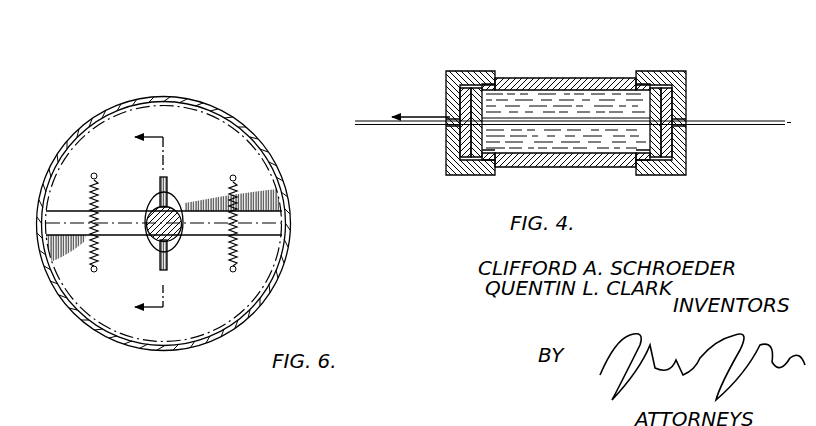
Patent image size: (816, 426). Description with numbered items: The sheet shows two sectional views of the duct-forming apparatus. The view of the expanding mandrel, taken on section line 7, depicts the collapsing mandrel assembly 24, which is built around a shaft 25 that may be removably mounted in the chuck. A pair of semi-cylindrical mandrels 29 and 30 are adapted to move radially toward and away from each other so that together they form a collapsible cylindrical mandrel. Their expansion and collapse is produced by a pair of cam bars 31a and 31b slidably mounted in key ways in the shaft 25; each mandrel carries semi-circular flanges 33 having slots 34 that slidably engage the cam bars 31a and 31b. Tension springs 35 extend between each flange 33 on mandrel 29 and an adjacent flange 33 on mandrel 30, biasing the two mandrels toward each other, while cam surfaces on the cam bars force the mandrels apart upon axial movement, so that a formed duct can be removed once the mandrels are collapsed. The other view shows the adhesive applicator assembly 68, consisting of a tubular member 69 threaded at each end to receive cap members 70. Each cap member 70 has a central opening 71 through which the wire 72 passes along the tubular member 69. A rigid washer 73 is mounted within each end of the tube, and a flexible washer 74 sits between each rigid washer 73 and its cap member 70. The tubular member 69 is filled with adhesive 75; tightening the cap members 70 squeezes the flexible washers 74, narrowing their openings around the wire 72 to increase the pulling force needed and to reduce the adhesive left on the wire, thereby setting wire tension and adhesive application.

In FIG. 6, the collapsing mandrel assembly 24 is at (80, 120).
In FIG. 6, the shaft 25 is at (147, 239).
In FIG. 6, the semi-cylindrical mandrel 29 is at (146, 108).
In FIG. 6, the semi-cylindrical mandrel 30 is at (123, 335).
In FIG. 6, the cam bar 31a is at (150, 197).
In FIG. 6, the cam bar 31b is at (167, 246).
In FIG. 6, the semi-circular flange 33 is at (262, 250).
In FIG. 6, the slot 34 is at (167, 179).
In FIG. 6, the tension spring 35 is at (236, 190).
In FIG. 6, the section line 7- 7 is at (158, 231).
In FIG. 4, the adhesive applicator assembly 68 is at (524, 70).
In FIG. 4, the tubular member 69 is at (587, 82).
In FIG. 4, the cap member 70 is at (460, 72).
In FIG. 4, the central opening 71 is at (452, 124).
In FIG. 4, the wire 72 is at (738, 121).
In FIG. 4, the rigid washer 73 is at (484, 144).
In FIG. 4, the flexible washer 74 is at (459, 158).
In FIG. 4, the adhesive 75 is at (608, 100).